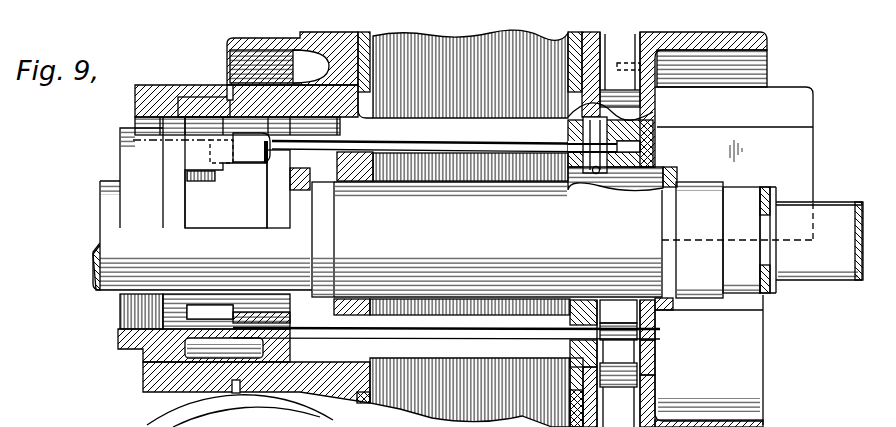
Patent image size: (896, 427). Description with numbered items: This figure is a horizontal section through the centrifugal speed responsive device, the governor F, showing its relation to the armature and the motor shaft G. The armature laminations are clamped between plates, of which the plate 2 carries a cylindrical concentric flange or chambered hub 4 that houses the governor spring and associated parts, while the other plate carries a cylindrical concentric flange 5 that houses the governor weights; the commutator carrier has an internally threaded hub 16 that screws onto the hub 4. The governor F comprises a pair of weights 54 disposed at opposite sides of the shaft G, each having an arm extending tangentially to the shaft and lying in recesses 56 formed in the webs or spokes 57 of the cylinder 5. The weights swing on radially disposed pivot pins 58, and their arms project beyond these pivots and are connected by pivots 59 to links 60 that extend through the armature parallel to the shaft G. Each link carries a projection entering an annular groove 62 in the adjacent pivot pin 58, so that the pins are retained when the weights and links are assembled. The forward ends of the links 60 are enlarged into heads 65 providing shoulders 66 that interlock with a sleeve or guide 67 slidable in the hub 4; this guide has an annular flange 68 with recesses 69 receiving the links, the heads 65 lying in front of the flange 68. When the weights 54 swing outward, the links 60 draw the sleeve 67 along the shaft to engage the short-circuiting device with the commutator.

The plate 2 is at (322, 46).
The cylindrical concentric flange or chambered hub 4 is at (281, 87).
The cylindrical concentric flange 5 is at (695, 422).
The internally threaded hub 16 is at (163, 390).
The weights 54 is at (734, 144).
The recesses 56 is at (652, 362).
The webs or spokes 57 is at (655, 388).
The pivot pins 58 is at (638, 245).
The pivots 59 is at (592, 178).
The links 60 is at (533, 145).
The annular groove 62 is at (656, 333).
The heads 65 is at (246, 160).
The shoulders 66 is at (272, 164).
The sleeve or guide 67 is at (226, 195).
The annular flange 68 is at (278, 222).
The recesses 69 is at (331, 171).
The governor F is at (721, 151).
The motor shaft G is at (478, 239).